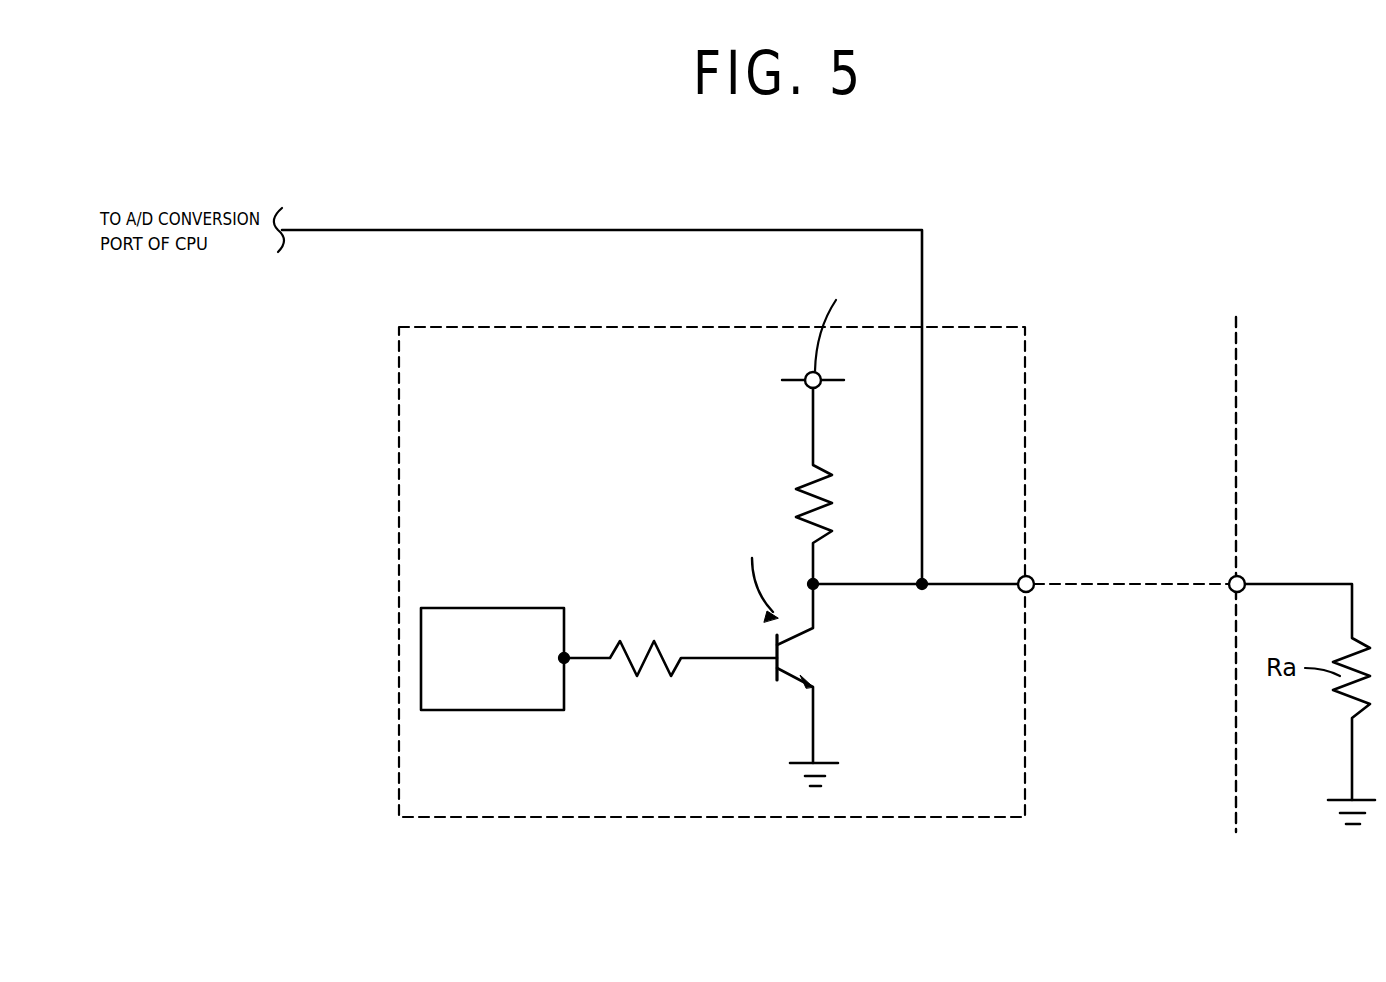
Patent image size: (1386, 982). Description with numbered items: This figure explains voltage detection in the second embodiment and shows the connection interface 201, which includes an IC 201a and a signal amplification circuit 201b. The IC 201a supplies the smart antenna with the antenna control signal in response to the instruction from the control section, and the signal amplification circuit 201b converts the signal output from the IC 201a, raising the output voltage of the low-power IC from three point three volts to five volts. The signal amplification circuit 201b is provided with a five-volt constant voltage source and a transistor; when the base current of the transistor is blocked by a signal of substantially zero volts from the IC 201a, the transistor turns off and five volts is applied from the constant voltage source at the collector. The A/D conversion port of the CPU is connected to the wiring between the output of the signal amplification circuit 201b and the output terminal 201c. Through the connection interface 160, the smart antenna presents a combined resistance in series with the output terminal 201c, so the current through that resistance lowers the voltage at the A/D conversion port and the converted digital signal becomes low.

The connection interface 201 is at (957, 325).
The IC 201a is at (476, 608).
The signal amplification circuit 201b is at (872, 673).
The output terminal 201c is at (1031, 576).
The connection interface 160 is at (1255, 341).